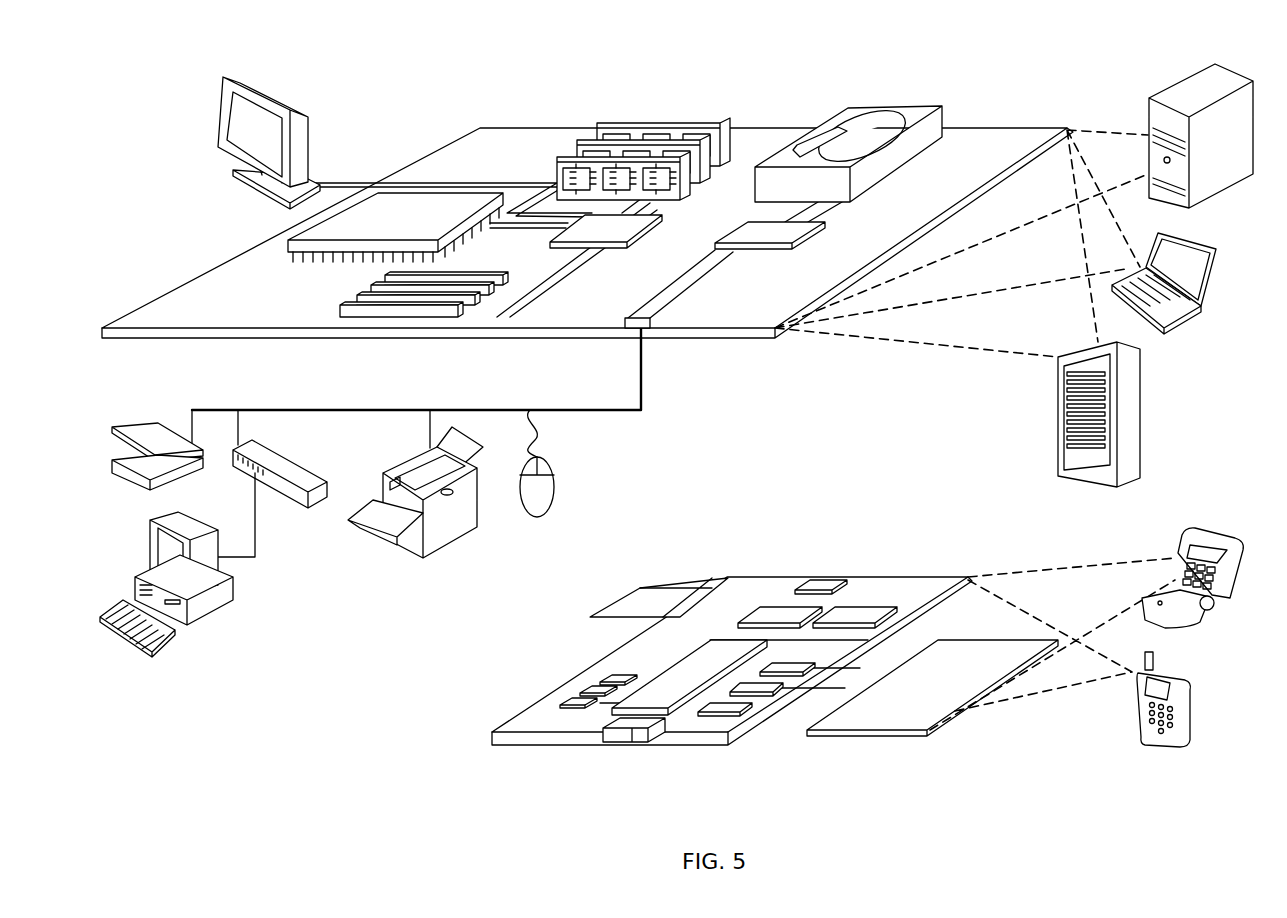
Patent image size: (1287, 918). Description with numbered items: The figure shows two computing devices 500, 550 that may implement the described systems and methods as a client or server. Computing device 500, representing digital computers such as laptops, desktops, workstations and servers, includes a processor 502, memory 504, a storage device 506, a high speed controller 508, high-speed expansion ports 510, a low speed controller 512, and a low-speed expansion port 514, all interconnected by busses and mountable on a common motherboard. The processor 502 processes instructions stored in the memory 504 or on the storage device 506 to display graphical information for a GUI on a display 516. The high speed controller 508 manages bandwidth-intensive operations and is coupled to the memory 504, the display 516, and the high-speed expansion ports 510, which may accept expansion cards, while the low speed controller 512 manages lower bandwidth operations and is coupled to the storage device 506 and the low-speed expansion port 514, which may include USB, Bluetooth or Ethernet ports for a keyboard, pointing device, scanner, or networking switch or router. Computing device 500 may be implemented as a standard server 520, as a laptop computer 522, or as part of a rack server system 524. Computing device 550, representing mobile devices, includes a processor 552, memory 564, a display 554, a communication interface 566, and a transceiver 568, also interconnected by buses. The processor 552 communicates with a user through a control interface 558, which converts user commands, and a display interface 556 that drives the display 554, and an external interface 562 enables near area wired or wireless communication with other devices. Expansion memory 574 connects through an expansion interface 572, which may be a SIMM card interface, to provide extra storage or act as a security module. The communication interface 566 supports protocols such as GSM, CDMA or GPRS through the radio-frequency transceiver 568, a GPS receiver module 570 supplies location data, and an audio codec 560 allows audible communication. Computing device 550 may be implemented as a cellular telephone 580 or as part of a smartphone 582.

The computing device 500 is at (414, 104).
The processor 502 is at (288, 241).
The memory 504 is at (607, 123).
The storage device 506 is at (840, 109).
The high speed controller 508 is at (583, 228).
The high-speed expansion ports 510 is at (357, 298).
The low speed controller 512 is at (753, 228).
The low-speed expansion port 514 is at (655, 330).
The display 516 is at (231, 78).
The standard server 520 is at (1146, 113).
The laptop computer 522 is at (1210, 254).
The rack server system 524 is at (1058, 444).
The computing device 550 is at (468, 743).
The processor 552 is at (665, 702).
The display 554 is at (895, 718).
The display interface 556 is at (730, 712).
The control interface 558 is at (762, 687).
The audio codec 560 is at (788, 666).
The external interface 562 is at (632, 742).
The memory 564 is at (580, 703).
The communication interface 566 is at (782, 612).
The transceiver 568 is at (855, 610).
The GPS receiver module 570 is at (827, 582).
The expansion interface 572 is at (695, 590).
The expansion memory 574 is at (627, 590).
The cellular telephone 580 is at (1190, 532).
The smartphone 582 is at (1140, 708).